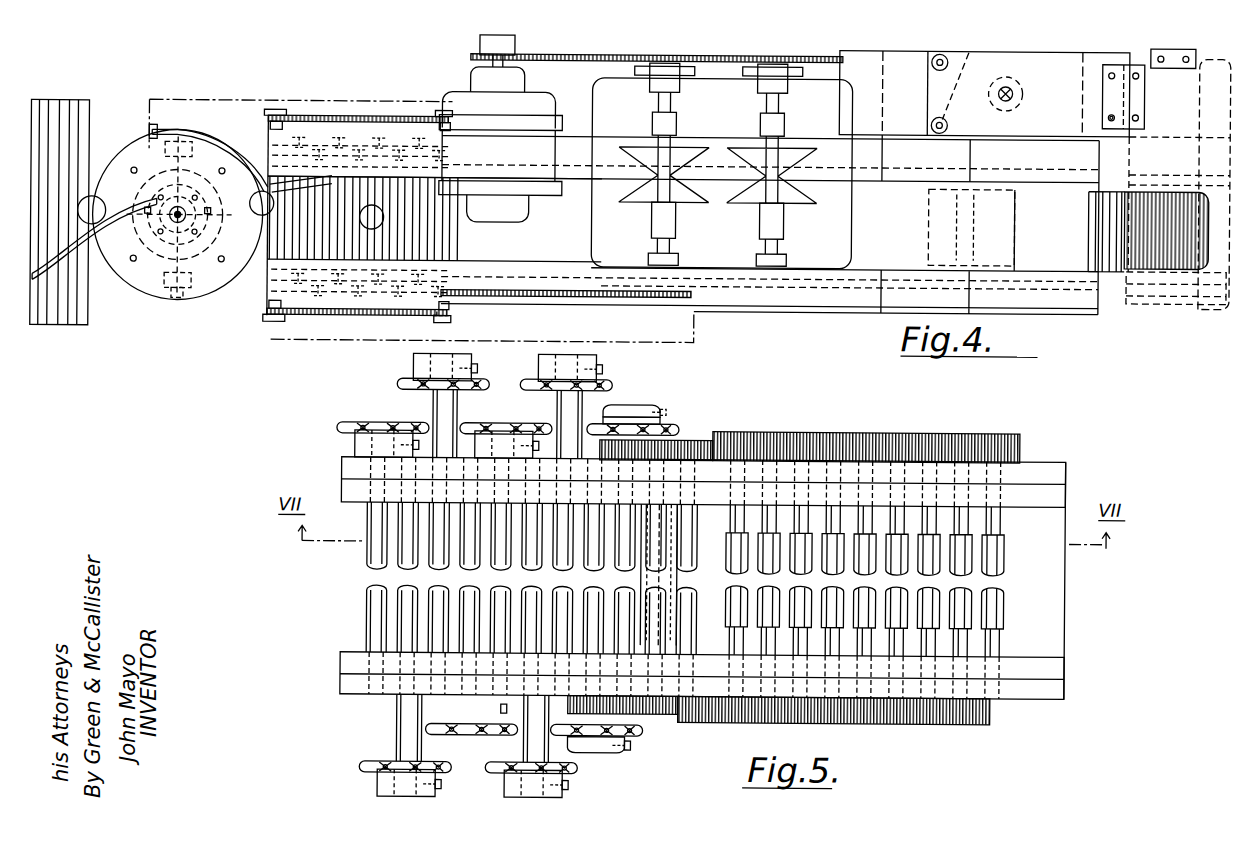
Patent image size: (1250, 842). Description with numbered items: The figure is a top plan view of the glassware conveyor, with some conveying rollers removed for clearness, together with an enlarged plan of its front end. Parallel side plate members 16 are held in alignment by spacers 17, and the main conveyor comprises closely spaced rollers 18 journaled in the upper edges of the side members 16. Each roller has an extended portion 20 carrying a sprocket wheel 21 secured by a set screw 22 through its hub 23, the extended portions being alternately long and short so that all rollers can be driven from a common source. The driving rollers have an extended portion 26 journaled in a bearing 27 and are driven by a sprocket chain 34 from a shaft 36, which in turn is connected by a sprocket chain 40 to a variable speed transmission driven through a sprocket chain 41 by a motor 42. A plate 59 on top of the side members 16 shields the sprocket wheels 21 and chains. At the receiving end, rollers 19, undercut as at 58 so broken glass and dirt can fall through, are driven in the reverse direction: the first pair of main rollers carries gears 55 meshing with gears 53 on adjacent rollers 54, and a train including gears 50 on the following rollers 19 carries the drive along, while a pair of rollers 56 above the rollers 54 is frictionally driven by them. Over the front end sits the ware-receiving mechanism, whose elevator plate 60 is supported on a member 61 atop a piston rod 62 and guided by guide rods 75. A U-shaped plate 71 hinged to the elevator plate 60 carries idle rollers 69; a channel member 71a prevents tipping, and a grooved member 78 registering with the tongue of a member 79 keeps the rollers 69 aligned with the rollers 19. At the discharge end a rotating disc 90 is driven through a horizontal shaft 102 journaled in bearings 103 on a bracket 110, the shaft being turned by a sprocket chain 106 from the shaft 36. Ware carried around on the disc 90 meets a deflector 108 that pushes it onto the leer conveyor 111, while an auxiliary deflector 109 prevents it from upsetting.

In FIG. 4, the leer conveyor 111 is at (66, 121).
In FIG. 4, the deflector 108 is at (93, 199).
In FIG. 4, the sprocket chain 106 is at (220, 131).
In FIG. 4, the auxiliary deflector 109 is at (253, 163).
In FIG. 4, the bracket 110 is at (267, 278).
In FIG. 4, the disc 90 is at (147, 291).
In FIG. 4, the horizontal shaft 102 is at (182, 293).
In FIG. 4, the bearings 103 is at (190, 303).
In FIG. 4, the bearing 27 is at (270, 112).
In FIG. 4, the extended portion 26 is at (266, 124).
In FIG. 4, the sprocket chain 34 is at (327, 118).
In FIG. 4, the rollers 18 is at (448, 236).
In FIG. 5, the rollers 18 is at (440, 567).
In FIG. 4, the motor 42 is at (453, 100).
In FIG. 4, the sprocket chain 41 is at (633, 55).
In FIG. 4, the side plate members 16 is at (518, 270).
In FIG. 4, the sprocket chain 40 is at (555, 297).
In FIG. 4, the shaft 36 is at (430, 317).
In FIG. 4, the elevator plate 60 is at (1066, 101).
In FIG. 4, the guide rods 75 is at (945, 58).
In FIG. 4, the member 61 is at (1002, 84).
In FIG. 4, the piston rod 62 is at (1015, 90).
In FIG. 4, the grooved member 78 is at (1140, 85).
In FIG. 4, the tongued member 79 is at (1100, 110).
In FIG. 4, the U-shaped plate 71 is at (1188, 121).
In FIG. 4, the channel member 71a is at (1182, 50).
In FIG. 4, the plate 59 is at (1032, 166).
In FIG. 4, the spacers 17 is at (985, 226).
In FIG. 4, the idle rollers 69 is at (1180, 250).
In FIG. 4, the rollers 56 is at (1117, 270).
In FIG. 5, the rollers 56 is at (662, 566).
In FIG. 5, the undercut 58 is at (810, 514).
In FIG. 5, the rollers 19 is at (1005, 560).
In FIG. 5, the rollers 54 is at (646, 566).
In FIG. 5, the extended portion 20 is at (457, 405).
In FIG. 5, the sprocket wheel 21 is at (478, 386).
In FIG. 5, the hub 23 is at (413, 363).
In FIG. 5, the set screw 22 is at (477, 370).
In FIG. 5, the gears 55 is at (620, 440).
In FIG. 5, the gears 53 is at (680, 440).
In FIG. 5, the gear 50 is at (845, 431).